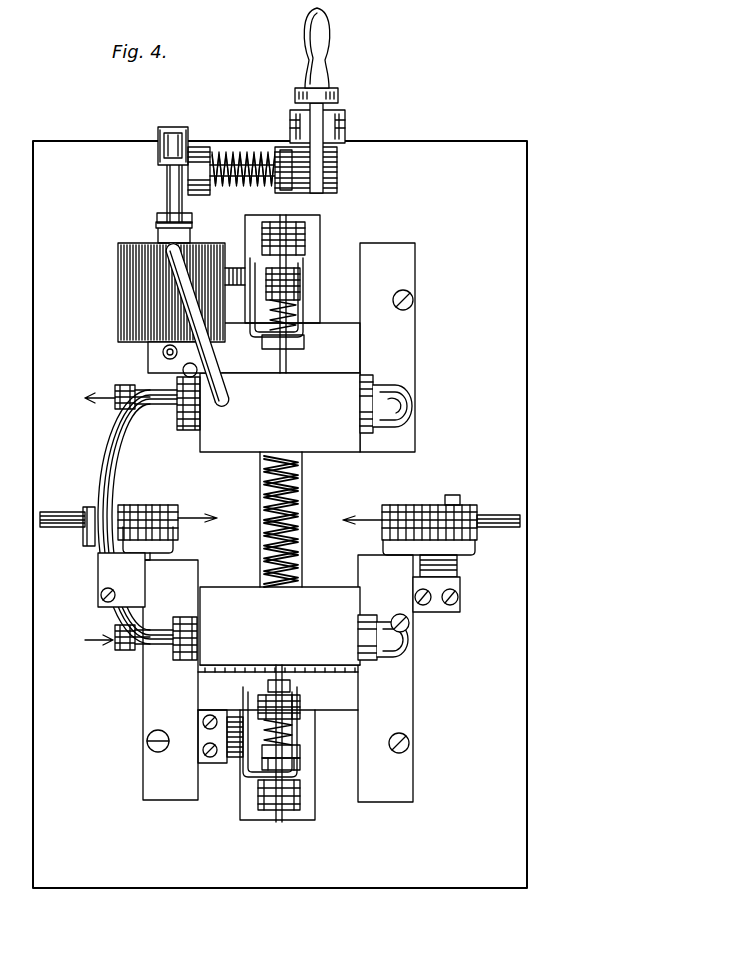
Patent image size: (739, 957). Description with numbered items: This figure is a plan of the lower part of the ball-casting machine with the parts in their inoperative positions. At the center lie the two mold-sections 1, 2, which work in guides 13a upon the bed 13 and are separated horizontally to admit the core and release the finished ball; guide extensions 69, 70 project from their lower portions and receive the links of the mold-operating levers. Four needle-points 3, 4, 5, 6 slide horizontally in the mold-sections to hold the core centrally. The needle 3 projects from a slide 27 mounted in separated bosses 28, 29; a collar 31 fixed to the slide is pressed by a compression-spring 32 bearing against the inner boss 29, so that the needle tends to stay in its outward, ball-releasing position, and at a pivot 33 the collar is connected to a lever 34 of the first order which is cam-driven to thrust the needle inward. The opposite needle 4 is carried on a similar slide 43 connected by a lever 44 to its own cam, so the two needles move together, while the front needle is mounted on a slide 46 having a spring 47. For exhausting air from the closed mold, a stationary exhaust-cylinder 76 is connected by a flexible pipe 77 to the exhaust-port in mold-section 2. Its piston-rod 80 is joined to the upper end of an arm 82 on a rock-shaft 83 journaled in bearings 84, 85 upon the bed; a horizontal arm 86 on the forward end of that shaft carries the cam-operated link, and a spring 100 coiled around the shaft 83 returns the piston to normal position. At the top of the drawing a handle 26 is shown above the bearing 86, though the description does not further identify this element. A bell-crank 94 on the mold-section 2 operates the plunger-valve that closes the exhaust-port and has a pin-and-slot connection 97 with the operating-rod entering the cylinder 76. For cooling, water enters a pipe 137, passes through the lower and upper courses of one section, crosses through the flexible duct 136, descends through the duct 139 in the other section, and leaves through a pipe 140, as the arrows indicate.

The mold-section 1 is at (280, 626).
The mold-section 2 is at (280, 412).
The needle-point 3 is at (284, 678).
The needle-point 4 is at (287, 366).
The needle-point 5 is at (362, 531).
The needle-point 6 is at (184, 522).
The bed 13 is at (280, 514).
The guides 13a is at (388, 338).
The handle 26 is at (322, 47).
The slide 27 is at (276, 821).
The boss 28 is at (297, 778).
The inner boss 29 is at (291, 700).
The collar 31 is at (297, 765).
The compression-spring 32 is at (289, 712).
The pivot 33 is at (300, 757).
The lever 34 is at (294, 744).
The slide 43 is at (283, 226).
The lever 44 is at (301, 270).
The slide 46 is at (497, 526).
The spring 47 is at (410, 508).
The guide extension 69 is at (279, 714).
The guide extension 70 is at (291, 348).
The exhaust-cylinder 76 is at (128, 300).
The pipe 77 is at (223, 350).
The piston-rod 80 is at (167, 208).
The arm 82 is at (176, 131).
The rock-shaft 83 is at (260, 153).
The bearing 84 is at (204, 190).
The bearing 85 is at (270, 192).
The horizontal arm 86 is at (315, 136).
The bell-crank 94 is at (183, 372).
The pin-and-slot connection 97 is at (163, 355).
The spring 100 is at (229, 147).
The flexible duct 136 is at (108, 456).
The pipe 137 is at (140, 648).
The duct 139 is at (410, 404).
The pipe 140 is at (127, 387).